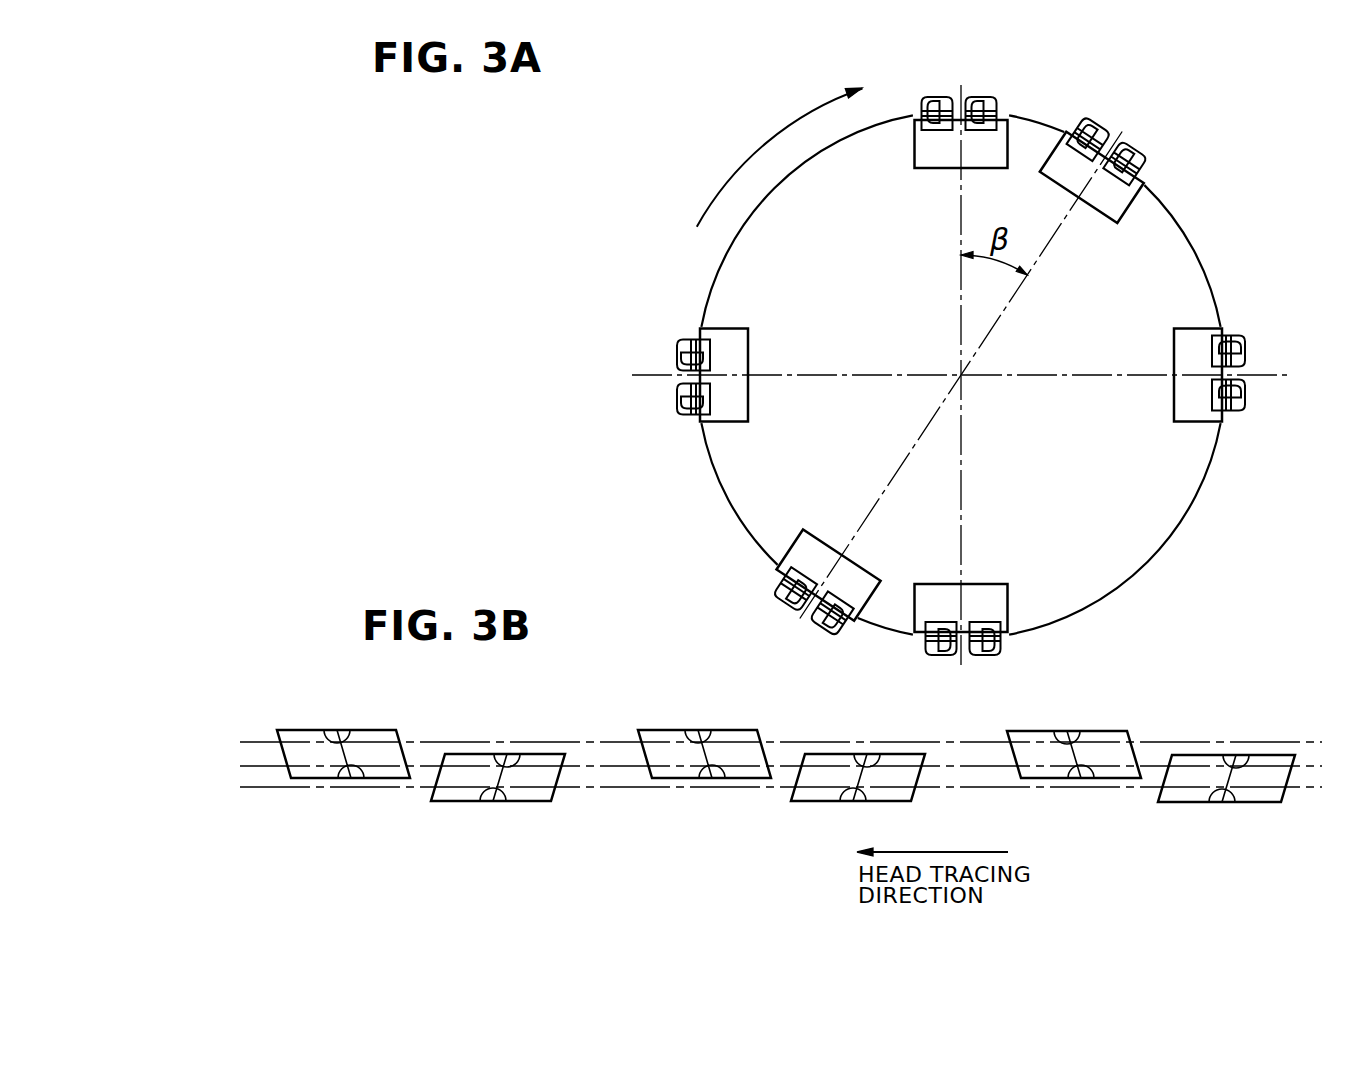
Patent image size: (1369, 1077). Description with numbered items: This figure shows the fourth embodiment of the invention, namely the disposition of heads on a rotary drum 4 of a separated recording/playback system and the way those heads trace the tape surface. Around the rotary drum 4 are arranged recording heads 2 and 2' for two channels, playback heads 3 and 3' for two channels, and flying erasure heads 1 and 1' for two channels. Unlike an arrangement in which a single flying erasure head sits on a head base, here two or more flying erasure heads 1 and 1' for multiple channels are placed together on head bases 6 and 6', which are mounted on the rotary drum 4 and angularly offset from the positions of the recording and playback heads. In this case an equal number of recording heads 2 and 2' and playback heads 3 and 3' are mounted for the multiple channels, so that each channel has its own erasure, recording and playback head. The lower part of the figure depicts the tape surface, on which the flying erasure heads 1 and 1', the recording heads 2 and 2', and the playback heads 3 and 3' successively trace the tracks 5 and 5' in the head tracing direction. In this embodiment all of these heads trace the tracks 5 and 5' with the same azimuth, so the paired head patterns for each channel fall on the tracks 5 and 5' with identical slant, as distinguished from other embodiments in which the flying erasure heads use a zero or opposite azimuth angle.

In FIG. 3A, the flying erasure head 1 is at (1106, 127).
In FIG. 3B, the flying erasure head 1 is at (421, 805).
In FIG. 3A, the recording head 2 is at (963, 85).
In FIG. 3B, the recording head 2 is at (781, 805).
In FIG. 3A, the playback head 3 is at (664, 364).
In FIG. 3B, the playback head 3 is at (1151, 805).
In FIG. 3A, the flying erasure head 1' is at (786, 610).
In FIG. 3A, the recording head 2' is at (977, 660).
In FIG. 3A, the playback head 3' is at (1265, 361).
In FIG. 3A, the rotary drum 4 is at (730, 268).
In FIG. 3B, the track 5 is at (781, 718).
In FIG. 3B, the track 5' is at (781, 819).
In FIG. 3A, the head base 6 is at (1092, 138).
In FIG. 3A, the head base 6' is at (820, 546).